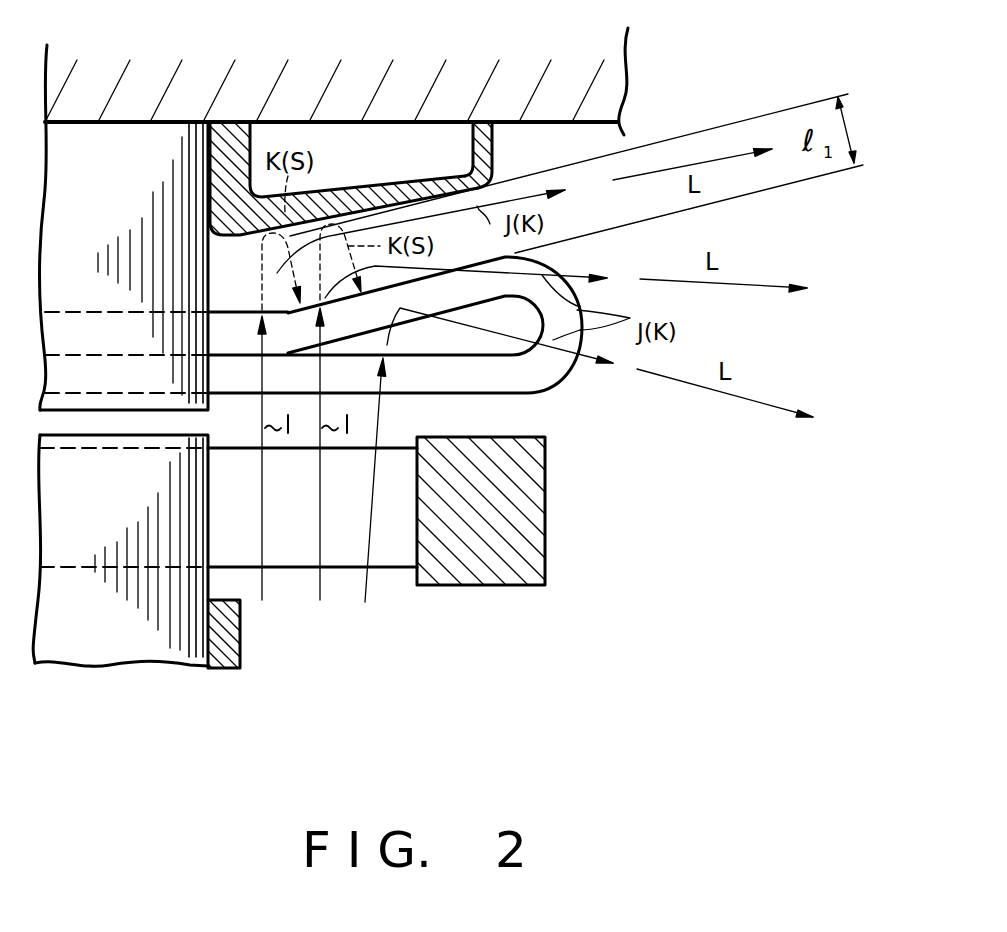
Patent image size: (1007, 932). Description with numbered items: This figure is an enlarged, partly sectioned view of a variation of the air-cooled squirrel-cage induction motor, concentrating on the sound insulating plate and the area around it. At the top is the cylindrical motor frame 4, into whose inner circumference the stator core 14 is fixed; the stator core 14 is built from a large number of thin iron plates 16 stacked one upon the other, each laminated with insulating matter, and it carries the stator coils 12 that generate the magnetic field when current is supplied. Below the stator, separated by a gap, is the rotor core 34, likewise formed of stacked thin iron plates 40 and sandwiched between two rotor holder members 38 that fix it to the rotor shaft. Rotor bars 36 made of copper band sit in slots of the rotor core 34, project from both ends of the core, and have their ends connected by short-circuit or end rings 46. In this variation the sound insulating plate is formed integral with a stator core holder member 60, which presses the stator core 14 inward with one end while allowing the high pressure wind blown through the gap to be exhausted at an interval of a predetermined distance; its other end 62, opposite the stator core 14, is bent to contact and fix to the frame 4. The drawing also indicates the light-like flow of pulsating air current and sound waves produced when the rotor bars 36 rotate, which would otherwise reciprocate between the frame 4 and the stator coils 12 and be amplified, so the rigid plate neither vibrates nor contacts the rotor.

The motor housing or frame 4 is at (450, 75).
The stator core 14 is at (124, 205).
The thin iron plates 16 is at (122, 142).
The stator core holder member 60 is at (228, 138).
The end of core holder member 62 is at (492, 157).
The stator coils 12 is at (537, 377).
The rotor core 34 is at (120, 590).
The thin iron plates 40 is at (145, 647).
The rotor holder members 38 is at (228, 642).
The rotor bars 36 is at (338, 557).
The short-circuit or end rings 46 is at (545, 555).